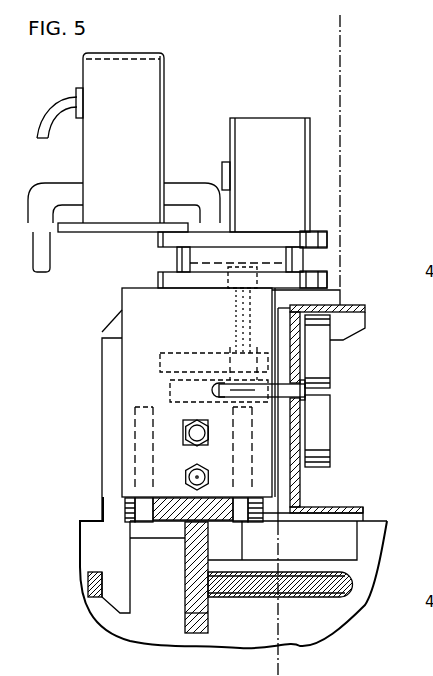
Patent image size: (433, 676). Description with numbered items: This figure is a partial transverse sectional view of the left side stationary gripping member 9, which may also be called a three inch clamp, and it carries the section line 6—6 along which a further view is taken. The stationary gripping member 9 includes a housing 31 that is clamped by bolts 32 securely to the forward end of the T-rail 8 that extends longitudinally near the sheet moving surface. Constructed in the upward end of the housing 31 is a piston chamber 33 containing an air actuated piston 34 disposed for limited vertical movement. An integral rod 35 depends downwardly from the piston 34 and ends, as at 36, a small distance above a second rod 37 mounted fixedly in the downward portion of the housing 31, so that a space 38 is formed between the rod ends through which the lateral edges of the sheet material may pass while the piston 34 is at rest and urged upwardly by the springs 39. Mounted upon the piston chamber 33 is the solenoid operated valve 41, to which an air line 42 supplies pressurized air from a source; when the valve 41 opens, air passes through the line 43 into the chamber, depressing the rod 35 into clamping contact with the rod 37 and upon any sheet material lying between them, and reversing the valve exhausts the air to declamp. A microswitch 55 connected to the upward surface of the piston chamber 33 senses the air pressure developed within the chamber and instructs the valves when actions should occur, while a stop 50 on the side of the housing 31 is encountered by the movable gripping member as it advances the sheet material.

The section line 6— 6 is at (346, 50).
The T-rail 8 is at (200, 543).
The stationary gripping member 9 is at (84, 405).
The housing 31 is at (132, 327).
The bolt 32 is at (125, 500).
The piston chamber 33 is at (330, 239).
The piston 34 is at (192, 253).
The rod 35 is at (228, 303).
The rod end 36 is at (310, 395).
The second rod 37 is at (255, 391).
The space 38 is at (212, 391).
The spring 39 is at (237, 318).
The solenoid operated valve 41 is at (163, 62).
The air line 42 is at (31, 266).
The air line 43 is at (185, 186).
The stop 50 is at (185, 432).
The microswitch 55 is at (311, 130).